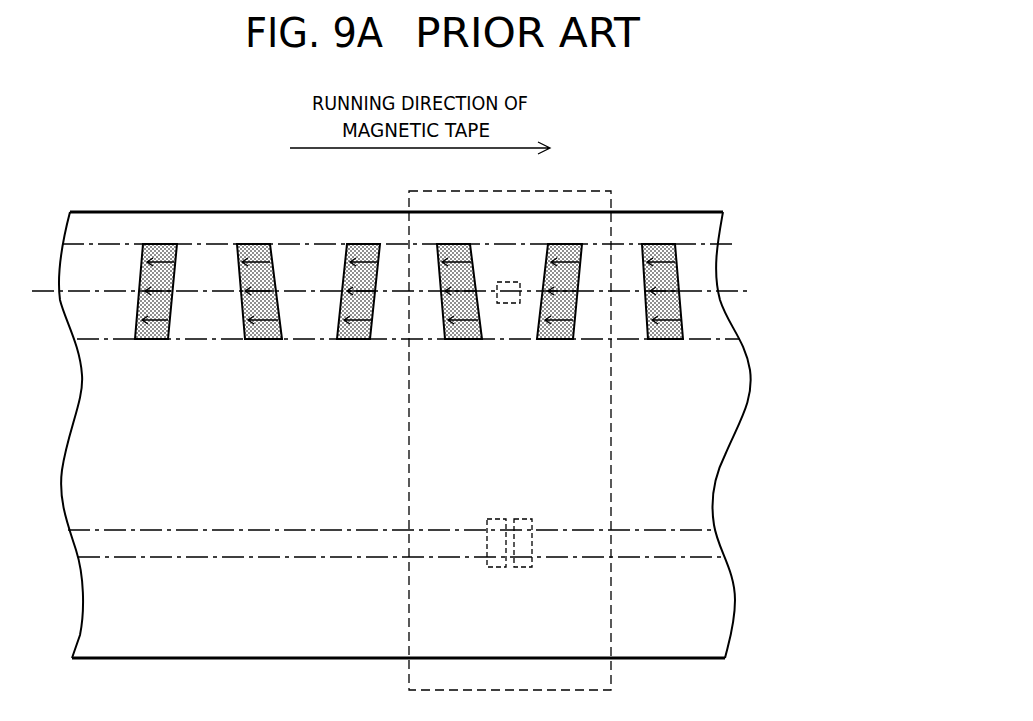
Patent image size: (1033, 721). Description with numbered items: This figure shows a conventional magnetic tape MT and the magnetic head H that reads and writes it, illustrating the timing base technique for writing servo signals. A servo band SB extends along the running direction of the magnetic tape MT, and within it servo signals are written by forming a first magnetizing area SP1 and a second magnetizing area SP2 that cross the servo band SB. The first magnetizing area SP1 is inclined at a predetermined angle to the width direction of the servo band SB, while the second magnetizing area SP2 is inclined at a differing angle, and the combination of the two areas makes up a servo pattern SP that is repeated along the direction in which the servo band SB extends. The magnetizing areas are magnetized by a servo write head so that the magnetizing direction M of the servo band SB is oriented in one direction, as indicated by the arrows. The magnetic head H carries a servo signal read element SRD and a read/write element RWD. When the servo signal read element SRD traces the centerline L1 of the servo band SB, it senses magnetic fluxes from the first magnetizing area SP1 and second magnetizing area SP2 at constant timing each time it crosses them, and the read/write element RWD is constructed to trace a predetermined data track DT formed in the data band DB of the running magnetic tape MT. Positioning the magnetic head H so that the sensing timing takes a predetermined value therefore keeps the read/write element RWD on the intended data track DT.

The magnetic tape MT is at (112, 212).
The magnetic head H is at (572, 191).
The servo signal read element SRD is at (512, 282).
The servo band SB is at (692, 244).
The centerline of the servo band L1 is at (727, 292).
The first magnetizing area SP1 is at (181, 340).
The second magnetizing area SP2 is at (232, 342).
The servo pattern SP is at (373, 478).
The magnetizing direction M is at (468, 322).
The read/write element RWD is at (540, 507).
The data band DB is at (652, 475).
The data track DT is at (703, 558).